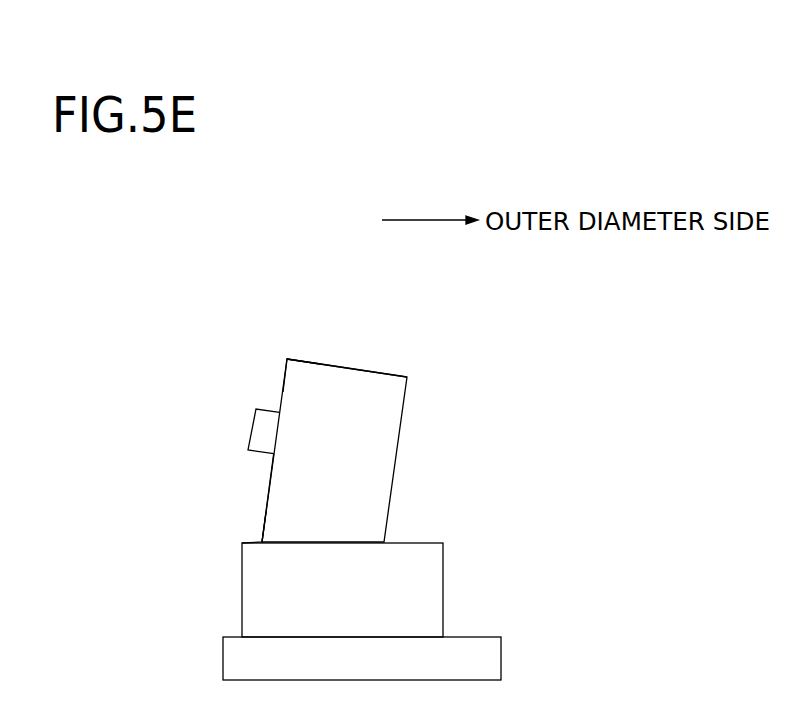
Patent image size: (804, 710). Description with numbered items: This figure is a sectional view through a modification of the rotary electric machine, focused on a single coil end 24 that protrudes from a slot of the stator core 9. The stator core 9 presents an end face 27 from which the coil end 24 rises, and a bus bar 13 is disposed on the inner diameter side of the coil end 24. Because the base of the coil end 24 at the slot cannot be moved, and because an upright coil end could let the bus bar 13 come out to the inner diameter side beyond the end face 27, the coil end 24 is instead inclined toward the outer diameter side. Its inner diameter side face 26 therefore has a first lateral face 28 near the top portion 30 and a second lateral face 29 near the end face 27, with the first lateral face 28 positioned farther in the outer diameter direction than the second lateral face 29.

The stator core 9 is at (262, 615).
The bus bar 13 is at (262, 433).
The coil end 24 is at (383, 410).
The inner diameter side face 26 is at (267, 472).
The end face 27 is at (242, 580).
The first lateral face 28 is at (287, 360).
The second lateral face 29 is at (265, 532).
The top portion 30 is at (355, 367).